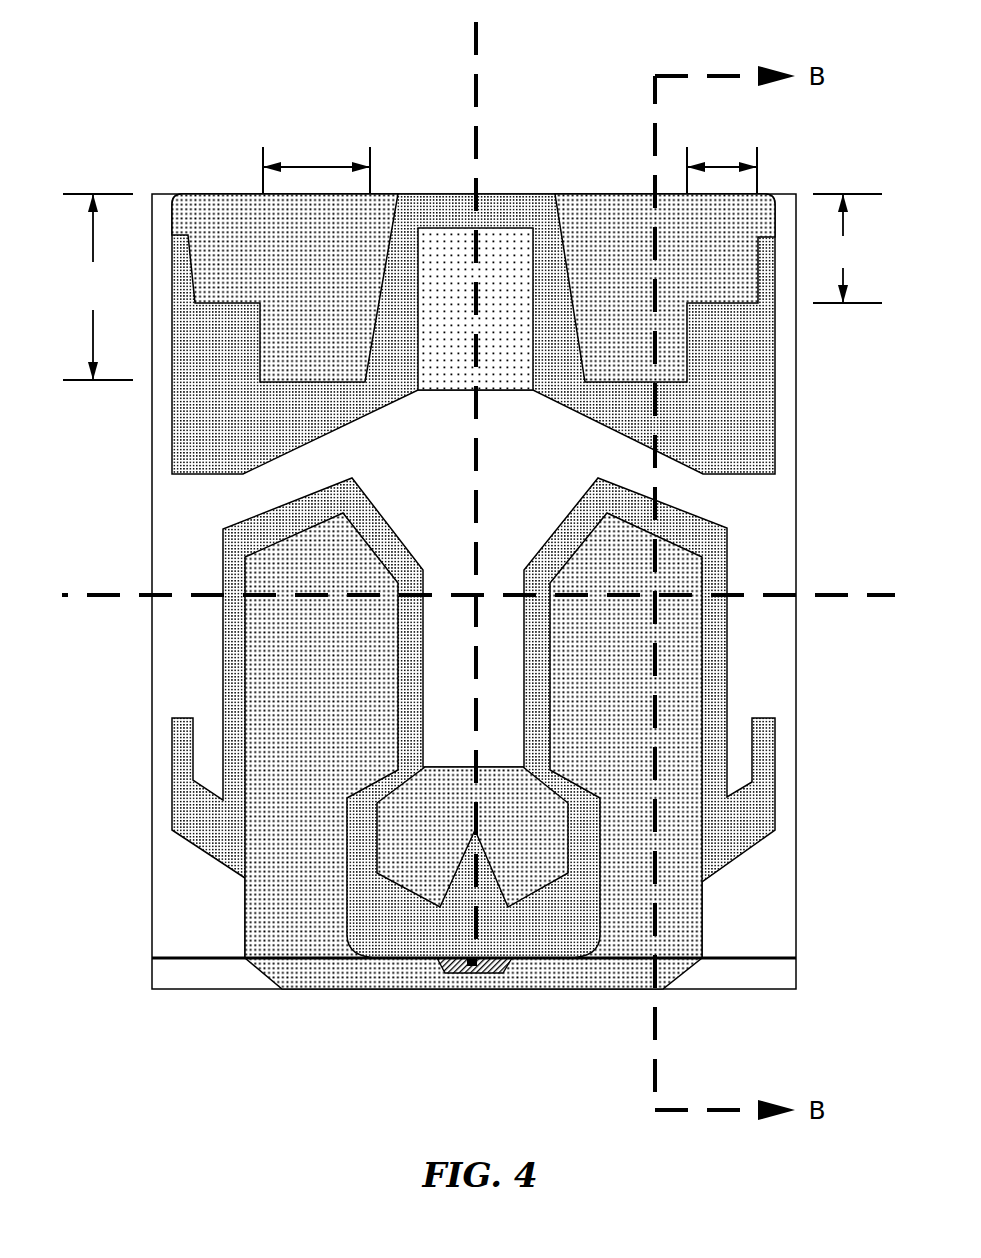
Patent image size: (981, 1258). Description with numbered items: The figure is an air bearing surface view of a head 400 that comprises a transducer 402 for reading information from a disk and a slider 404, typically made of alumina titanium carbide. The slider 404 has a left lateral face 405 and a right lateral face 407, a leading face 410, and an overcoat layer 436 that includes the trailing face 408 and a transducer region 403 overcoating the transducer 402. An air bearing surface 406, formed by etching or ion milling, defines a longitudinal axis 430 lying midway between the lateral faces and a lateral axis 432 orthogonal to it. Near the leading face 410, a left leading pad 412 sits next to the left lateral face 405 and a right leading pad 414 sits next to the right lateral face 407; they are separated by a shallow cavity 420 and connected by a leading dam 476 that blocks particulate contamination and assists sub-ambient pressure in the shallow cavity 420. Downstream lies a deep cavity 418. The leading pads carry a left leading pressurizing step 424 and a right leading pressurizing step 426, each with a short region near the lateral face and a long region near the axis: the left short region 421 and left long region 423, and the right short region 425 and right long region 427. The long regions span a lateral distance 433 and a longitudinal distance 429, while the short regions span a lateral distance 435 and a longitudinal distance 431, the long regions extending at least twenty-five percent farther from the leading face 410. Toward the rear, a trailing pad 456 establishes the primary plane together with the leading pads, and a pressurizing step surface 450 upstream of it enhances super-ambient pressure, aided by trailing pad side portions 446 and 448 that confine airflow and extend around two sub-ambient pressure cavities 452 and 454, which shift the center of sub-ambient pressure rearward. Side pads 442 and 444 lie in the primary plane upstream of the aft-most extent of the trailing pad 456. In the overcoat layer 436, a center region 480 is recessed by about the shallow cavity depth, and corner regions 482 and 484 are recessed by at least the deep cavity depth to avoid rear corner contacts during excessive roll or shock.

The head 400 is at (548, 80).
The transducer 402 is at (468, 963).
The transducer region 403 is at (490, 968).
The slider 404 is at (798, 193).
The left lateral face 405 is at (152, 903).
The air bearing surface 406 is at (785, 762).
The right lateral face 407 is at (797, 900).
The trailing face 408 is at (210, 990).
The leading face 410 is at (200, 193).
The left leading pad 412 is at (197, 434).
The right leading pad 414 is at (706, 439).
The deep cavity 418 is at (400, 476).
The shallow cavity 420 is at (426, 321).
The left short region 421 is at (202, 289).
The left long region 423 is at (300, 359).
The left leading pressurizing step 424 is at (258, 218).
The right short region 425 is at (695, 289).
The right leading pressurizing step 426 is at (622, 213).
The right long region 427 is at (598, 357).
The longitudinal span distance of long regions 429 is at (98, 287).
The longitudinal axis 430 is at (468, 50).
The longitudinal span distance of short regions 431 is at (847, 248).
The lateral axis 432 is at (135, 597).
The lateral span distance of long regions 433 is at (316, 164).
The lateral span distance of short regions 435 is at (722, 162).
The overcoat layer 436 is at (797, 972).
The side pad 442 is at (185, 832).
The side pad 444 is at (714, 832).
The trailing pad side portion 446 is at (373, 538).
The trailing pad side portion 448 is at (575, 543).
The pressurizing step surface 450 is at (405, 822).
The sub-ambient pressure cavity 452 is at (299, 696).
The sub-ambient pressure cavity 454 is at (578, 696).
The trailing pad 456 is at (510, 944).
The leading dam 476 is at (503, 200).
The center region 480 is at (605, 973).
The corner region 482 is at (722, 975).
The corner region 484 is at (170, 977).